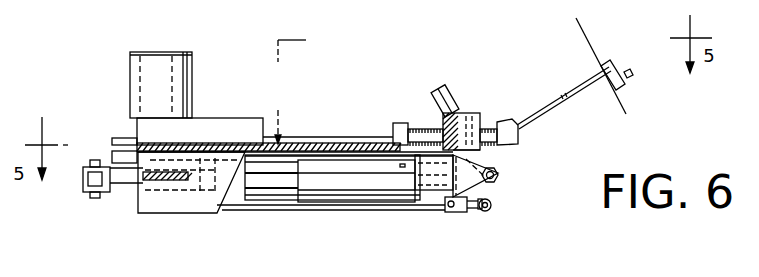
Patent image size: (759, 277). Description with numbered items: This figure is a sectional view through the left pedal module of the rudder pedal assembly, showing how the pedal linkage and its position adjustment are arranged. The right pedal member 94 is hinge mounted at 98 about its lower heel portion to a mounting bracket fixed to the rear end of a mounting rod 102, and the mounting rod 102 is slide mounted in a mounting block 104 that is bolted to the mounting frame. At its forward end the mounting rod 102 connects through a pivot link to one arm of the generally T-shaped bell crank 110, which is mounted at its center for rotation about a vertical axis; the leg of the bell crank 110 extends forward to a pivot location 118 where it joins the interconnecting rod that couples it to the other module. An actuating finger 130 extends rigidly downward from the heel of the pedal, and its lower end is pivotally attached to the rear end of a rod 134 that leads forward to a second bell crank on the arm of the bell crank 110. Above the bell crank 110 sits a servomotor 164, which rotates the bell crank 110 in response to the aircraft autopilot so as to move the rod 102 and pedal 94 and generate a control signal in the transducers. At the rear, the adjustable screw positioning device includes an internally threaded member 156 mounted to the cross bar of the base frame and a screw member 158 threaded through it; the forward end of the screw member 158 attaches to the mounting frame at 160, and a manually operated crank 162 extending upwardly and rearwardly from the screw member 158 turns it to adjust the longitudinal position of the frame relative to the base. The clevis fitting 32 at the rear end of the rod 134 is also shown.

The servomotor 164 is at (141, 80).
The pivot location 118 is at (88, 178).
The bell crank 110 is at (124, 192).
The mounting rod 102 is at (262, 187).
The mounting block 104 is at (338, 188).
The rod 134 is at (400, 208).
The clevis connector 32 is at (490, 212).
The actuating finger 130 is at (495, 200).
The hinge mounting 98 is at (498, 180).
The right pedal member 94 is at (500, 155).
The attachment point of screw member 160 is at (400, 123).
The screw member 158 is at (432, 128).
The internally threaded member 156 is at (470, 113).
The manually operated crank 162 is at (577, 93).